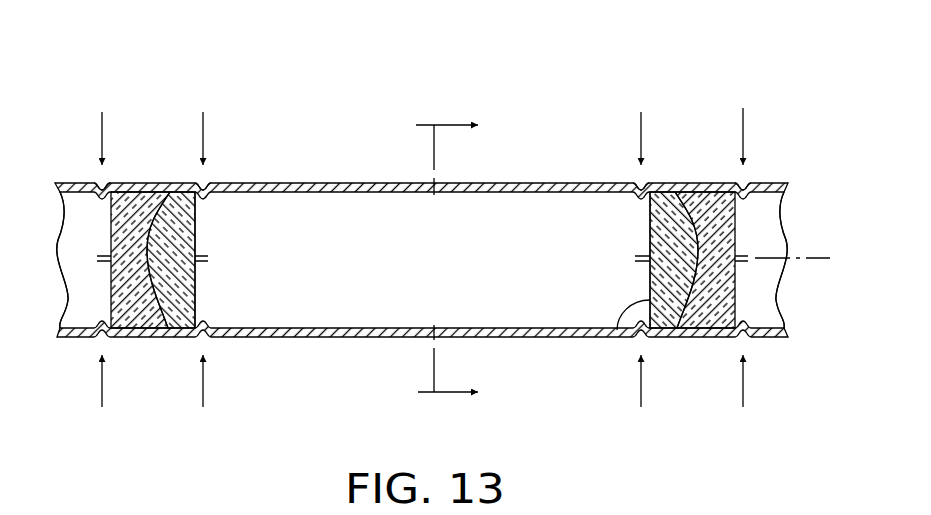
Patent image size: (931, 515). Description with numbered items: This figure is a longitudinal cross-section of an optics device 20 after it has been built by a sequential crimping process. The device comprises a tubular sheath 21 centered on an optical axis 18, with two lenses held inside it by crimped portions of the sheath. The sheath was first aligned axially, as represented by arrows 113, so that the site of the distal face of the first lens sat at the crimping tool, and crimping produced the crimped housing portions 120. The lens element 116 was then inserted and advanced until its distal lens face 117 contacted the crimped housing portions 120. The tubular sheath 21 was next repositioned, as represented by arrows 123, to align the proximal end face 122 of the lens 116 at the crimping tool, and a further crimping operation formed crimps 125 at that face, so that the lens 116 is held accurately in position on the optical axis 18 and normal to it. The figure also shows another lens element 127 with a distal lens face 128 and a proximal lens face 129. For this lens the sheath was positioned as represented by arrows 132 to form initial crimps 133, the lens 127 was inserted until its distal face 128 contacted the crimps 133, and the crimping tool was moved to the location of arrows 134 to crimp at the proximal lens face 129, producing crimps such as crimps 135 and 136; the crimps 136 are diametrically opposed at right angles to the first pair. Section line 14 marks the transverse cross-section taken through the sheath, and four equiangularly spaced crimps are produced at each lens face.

The section line 14- 14 is at (428, 261).
The optical axis 18 is at (802, 258).
The optics device 20 is at (421, 170).
The tubular sheath 21 is at (380, 182).
The arrows 113 is at (102, 123).
The lens element 116 is at (150, 306).
The distal lens face 117 is at (111, 296).
The crimped housing portions 120 is at (106, 183).
The proximal end face 122 is at (195, 267).
The arrows 123 is at (203, 123).
The crimps 125 is at (207, 183).
The lens element 127 is at (707, 303).
The distal lens face 128 is at (617, 330).
The proximal lens face 129 is at (735, 302).
The arrows 132 is at (641, 123).
The crimps 133 is at (637, 183).
The arrows 134 is at (743, 120).
The fourth detent 135 is at (740, 183).
The crimps 136 is at (650, 262).